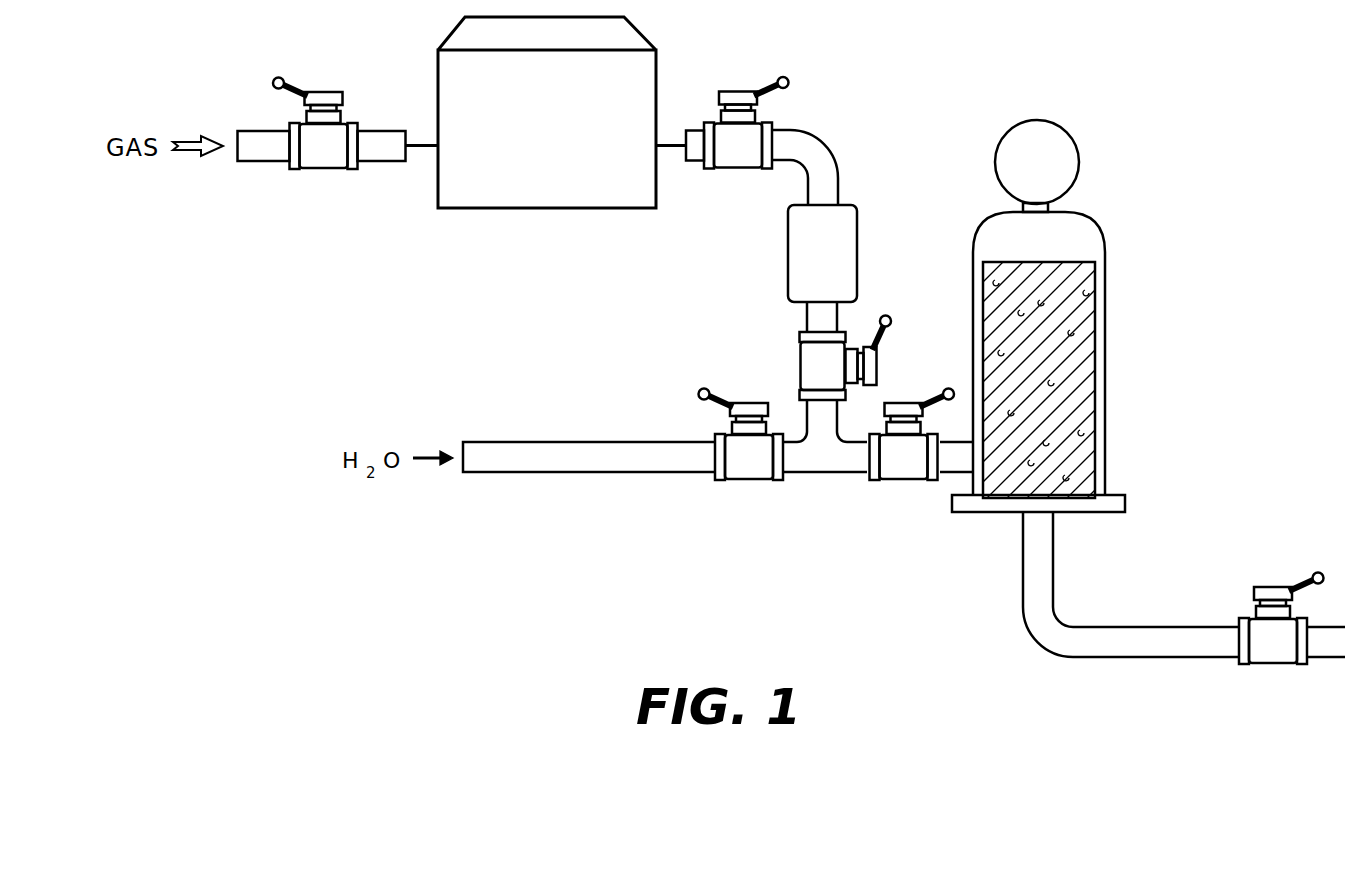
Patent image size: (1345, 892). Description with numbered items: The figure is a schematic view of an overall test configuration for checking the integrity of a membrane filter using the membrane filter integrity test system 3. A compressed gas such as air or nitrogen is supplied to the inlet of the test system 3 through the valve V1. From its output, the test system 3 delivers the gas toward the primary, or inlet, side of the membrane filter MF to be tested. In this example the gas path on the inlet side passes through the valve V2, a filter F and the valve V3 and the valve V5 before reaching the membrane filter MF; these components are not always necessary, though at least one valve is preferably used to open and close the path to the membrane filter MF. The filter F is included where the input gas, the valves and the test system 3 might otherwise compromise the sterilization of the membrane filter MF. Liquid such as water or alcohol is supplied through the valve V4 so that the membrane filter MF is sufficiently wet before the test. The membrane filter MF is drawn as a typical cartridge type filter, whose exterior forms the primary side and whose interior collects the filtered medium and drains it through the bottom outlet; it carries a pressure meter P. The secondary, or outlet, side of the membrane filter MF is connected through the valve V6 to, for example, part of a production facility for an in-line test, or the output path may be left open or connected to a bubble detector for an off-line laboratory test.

The membrane filter integrity test system 3 is at (556, 137).
The valve V1 is at (322, 124).
The valve V2 is at (737, 123).
The valve V3 is at (846, 358).
The valve V4 is at (741, 435).
The valve V5 is at (912, 435).
The valve V6 is at (1281, 619).
The filter F is at (822, 253).
The pressure meter P is at (1037, 166).
The membrane filter MF is at (1035, 362).